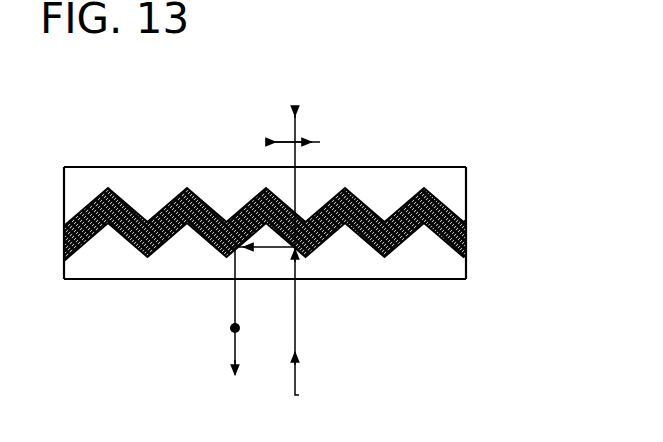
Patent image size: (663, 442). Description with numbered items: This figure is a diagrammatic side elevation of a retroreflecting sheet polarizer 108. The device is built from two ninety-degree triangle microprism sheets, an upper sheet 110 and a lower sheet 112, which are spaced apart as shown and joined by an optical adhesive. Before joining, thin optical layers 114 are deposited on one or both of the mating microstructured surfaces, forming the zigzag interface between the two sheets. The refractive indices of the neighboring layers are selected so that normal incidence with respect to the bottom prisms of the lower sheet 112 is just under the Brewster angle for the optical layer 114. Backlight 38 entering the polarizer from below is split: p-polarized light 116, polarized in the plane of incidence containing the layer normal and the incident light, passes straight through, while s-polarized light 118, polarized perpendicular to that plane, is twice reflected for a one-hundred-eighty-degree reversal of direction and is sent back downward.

The retroreflecting sheet polarizer 108 is at (413, 155).
The upper sheet 110 is at (222, 182).
The lower sheet 112 is at (167, 265).
The thin optical layers 114 is at (462, 240).
The p-polarized light 116 is at (296, 128).
The backlight 38 is at (298, 374).
The s-polarized light 118 is at (235, 352).